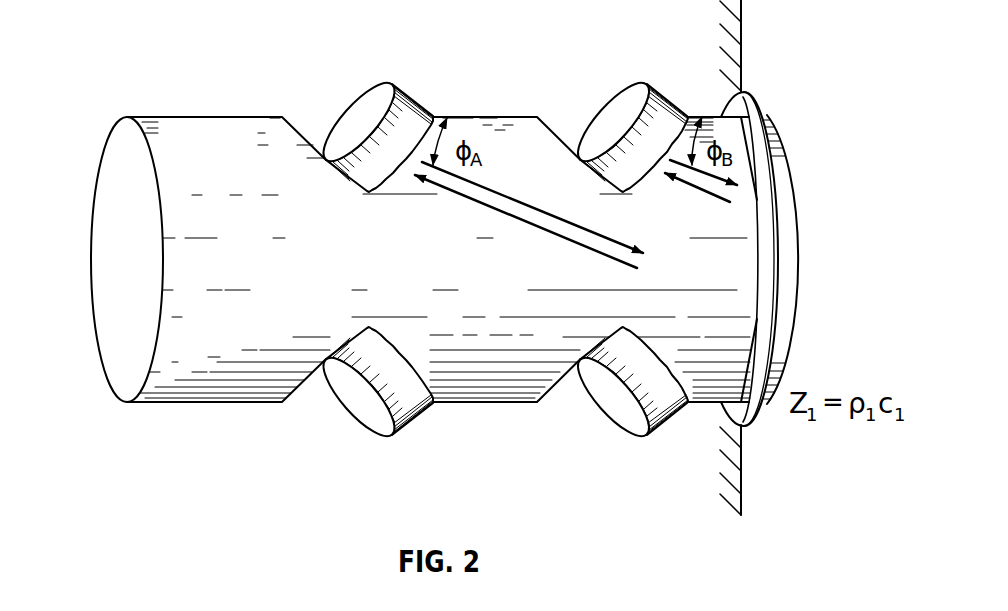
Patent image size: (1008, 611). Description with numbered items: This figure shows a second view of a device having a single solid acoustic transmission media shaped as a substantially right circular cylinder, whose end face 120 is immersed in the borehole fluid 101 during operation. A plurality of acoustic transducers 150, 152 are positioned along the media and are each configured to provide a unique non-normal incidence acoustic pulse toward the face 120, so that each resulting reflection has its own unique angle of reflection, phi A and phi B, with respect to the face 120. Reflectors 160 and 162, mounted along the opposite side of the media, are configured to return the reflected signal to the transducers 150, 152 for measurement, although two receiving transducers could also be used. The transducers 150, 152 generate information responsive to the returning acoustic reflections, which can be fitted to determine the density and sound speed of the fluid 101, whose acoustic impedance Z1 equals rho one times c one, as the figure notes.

The borehole fluid 101 is at (848, 263).
The face 120 is at (790, 162).
The acoustic transducer 150 is at (360, 122).
The acoustic transducer 152 is at (616, 122).
The reflector 160 is at (360, 396).
The reflector 162 is at (616, 396).